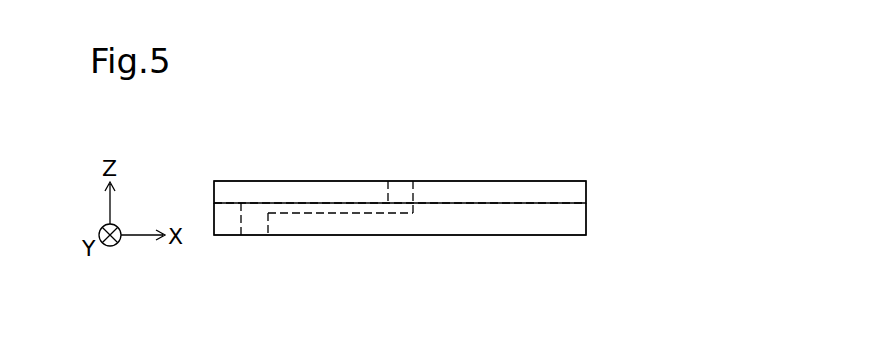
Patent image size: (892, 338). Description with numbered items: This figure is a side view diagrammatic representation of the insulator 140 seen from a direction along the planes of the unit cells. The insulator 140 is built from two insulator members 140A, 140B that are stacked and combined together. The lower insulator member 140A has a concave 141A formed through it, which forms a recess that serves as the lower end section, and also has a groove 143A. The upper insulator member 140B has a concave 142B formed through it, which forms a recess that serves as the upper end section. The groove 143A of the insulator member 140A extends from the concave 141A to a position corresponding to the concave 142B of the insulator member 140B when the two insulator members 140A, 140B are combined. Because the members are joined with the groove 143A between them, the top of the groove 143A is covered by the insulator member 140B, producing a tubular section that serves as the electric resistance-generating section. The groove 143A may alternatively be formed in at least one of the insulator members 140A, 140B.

The insulator 140 is at (703, 172).
The insulator member 140A is at (586, 220).
The insulator member 140B is at (586, 197).
The concave 141A is at (253, 236).
The concave 142B is at (400, 181).
The groove 143A is at (357, 214).